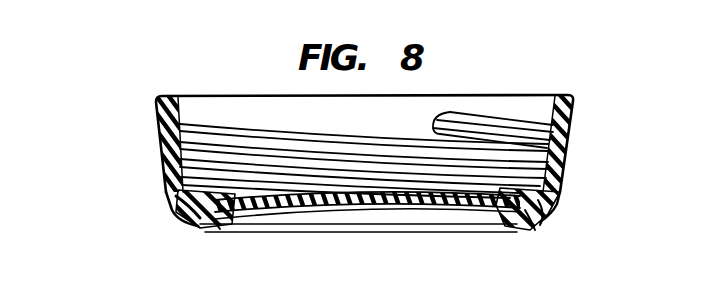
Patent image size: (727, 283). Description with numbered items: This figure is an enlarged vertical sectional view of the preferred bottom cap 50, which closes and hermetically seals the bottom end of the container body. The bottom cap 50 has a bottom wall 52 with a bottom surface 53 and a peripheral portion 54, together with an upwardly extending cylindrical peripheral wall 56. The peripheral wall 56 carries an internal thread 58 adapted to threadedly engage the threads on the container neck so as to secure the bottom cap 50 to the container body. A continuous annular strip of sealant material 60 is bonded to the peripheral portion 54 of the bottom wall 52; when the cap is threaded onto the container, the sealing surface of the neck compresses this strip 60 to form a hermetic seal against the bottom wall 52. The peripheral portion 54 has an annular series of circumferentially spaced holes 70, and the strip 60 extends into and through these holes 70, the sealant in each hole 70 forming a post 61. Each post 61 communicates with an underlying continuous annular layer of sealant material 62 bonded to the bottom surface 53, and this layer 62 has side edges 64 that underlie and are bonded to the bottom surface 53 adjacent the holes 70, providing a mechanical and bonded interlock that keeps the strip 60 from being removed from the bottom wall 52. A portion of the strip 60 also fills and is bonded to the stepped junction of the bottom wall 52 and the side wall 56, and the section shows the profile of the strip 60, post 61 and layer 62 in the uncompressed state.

The bottom cap 50 is at (140, 88).
The bottom wall 52 is at (425, 208).
The bottom surface 53 is at (343, 213).
The peripheral portion 54 is at (192, 218).
The peripheral wall 56 is at (160, 141).
The internal thread 58 is at (572, 130).
The strip of sealant material 60 is at (175, 183).
The post 61 is at (533, 231).
The underlying layer of sealant material 62 is at (283, 214).
The side edges 64 is at (540, 226).
The holes 70 is at (219, 230).